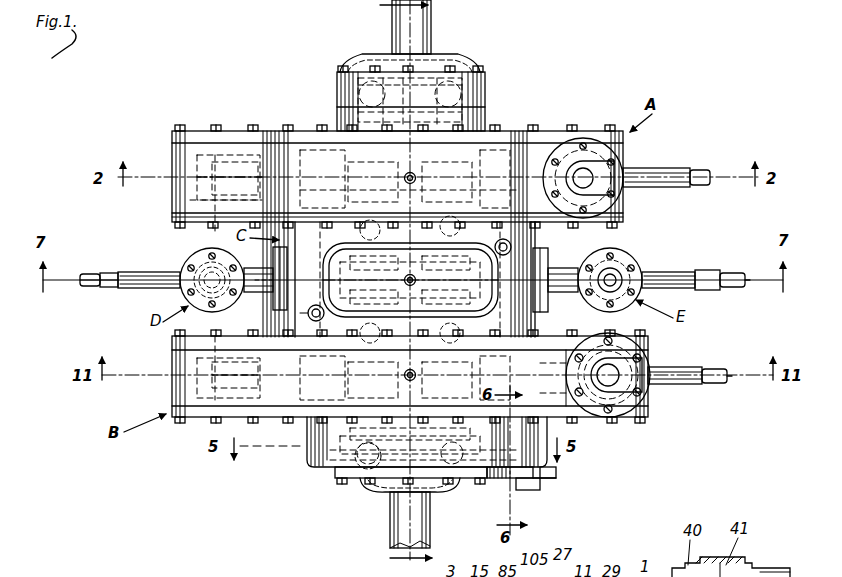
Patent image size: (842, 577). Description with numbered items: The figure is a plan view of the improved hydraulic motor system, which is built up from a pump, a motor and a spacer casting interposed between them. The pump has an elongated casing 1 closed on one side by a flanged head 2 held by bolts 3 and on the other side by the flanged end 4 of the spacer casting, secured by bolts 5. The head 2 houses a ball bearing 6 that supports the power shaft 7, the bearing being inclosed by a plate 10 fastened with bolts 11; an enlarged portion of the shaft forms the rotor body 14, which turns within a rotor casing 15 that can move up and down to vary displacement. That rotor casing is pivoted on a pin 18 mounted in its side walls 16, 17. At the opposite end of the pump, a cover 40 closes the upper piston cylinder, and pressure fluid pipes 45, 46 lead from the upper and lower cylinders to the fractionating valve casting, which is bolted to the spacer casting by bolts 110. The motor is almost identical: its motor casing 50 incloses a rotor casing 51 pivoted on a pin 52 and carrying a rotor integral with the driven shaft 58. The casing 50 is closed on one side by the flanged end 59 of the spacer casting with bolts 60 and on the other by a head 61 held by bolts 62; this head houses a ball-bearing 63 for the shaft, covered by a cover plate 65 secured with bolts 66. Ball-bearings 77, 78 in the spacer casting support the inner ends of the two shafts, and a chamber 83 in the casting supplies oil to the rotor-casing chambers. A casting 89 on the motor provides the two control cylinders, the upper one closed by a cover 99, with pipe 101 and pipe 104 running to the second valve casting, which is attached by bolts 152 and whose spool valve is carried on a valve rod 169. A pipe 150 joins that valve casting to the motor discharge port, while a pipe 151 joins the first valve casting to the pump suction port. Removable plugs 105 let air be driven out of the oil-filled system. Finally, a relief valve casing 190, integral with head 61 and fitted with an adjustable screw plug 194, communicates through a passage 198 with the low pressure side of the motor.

The casing of the pump 1 is at (492, 150).
The flanged head 2 is at (462, 95).
The bolts 3 is at (253, 125).
The flanged end 4 is at (178, 216).
The bolts 5 is at (213, 228).
The ball bearing 6 is at (470, 84).
The shaft 7 is at (433, 33).
The plate 10 is at (375, 55).
The bolts 11 is at (343, 66).
The rotor body 14 is at (390, 288).
The rotor casing 15 is at (288, 150).
The side wall of the rotor casing 16 is at (190, 200).
The side wall of the rotor casing 17 is at (205, 165).
The pin 18 is at (215, 180).
The cover 40 is at (605, 150).
The pressure fluid pipe 45 is at (672, 168).
The pressure fluid pipe 46 is at (696, 170).
The motor casing 50 is at (580, 407).
The rotor casing 51 is at (205, 368).
The pin 52 is at (205, 382).
The shaft 58 is at (432, 520).
The flanged end 59 is at (232, 337).
The bolts 60 is at (180, 333).
The head 61 is at (310, 470).
The bolts 62 is at (212, 424).
The ball-bearing 63 is at (365, 470).
The cover plate 65 is at (442, 486).
The bolts 66 is at (355, 484).
The ball-bearing 77 is at (446, 216).
The ball-bearing 78 is at (462, 328).
The chamber 83 is at (345, 265).
The casting 89 is at (648, 368).
The cover 99 is at (604, 410).
The pressure fluid pipe 101 is at (670, 272).
The pipe 104 is at (742, 275).
The removable plugs 105 is at (406, 174).
The bolts 110 is at (272, 258).
The pipe 150 is at (307, 316).
The pipe 151 is at (512, 247).
The bolts 152 is at (550, 262).
The valve rod 169 is at (615, 277).
The casing of a relief valve 190 is at (557, 474).
The screw plug 194 is at (545, 486).
The passage 198 is at (536, 480).